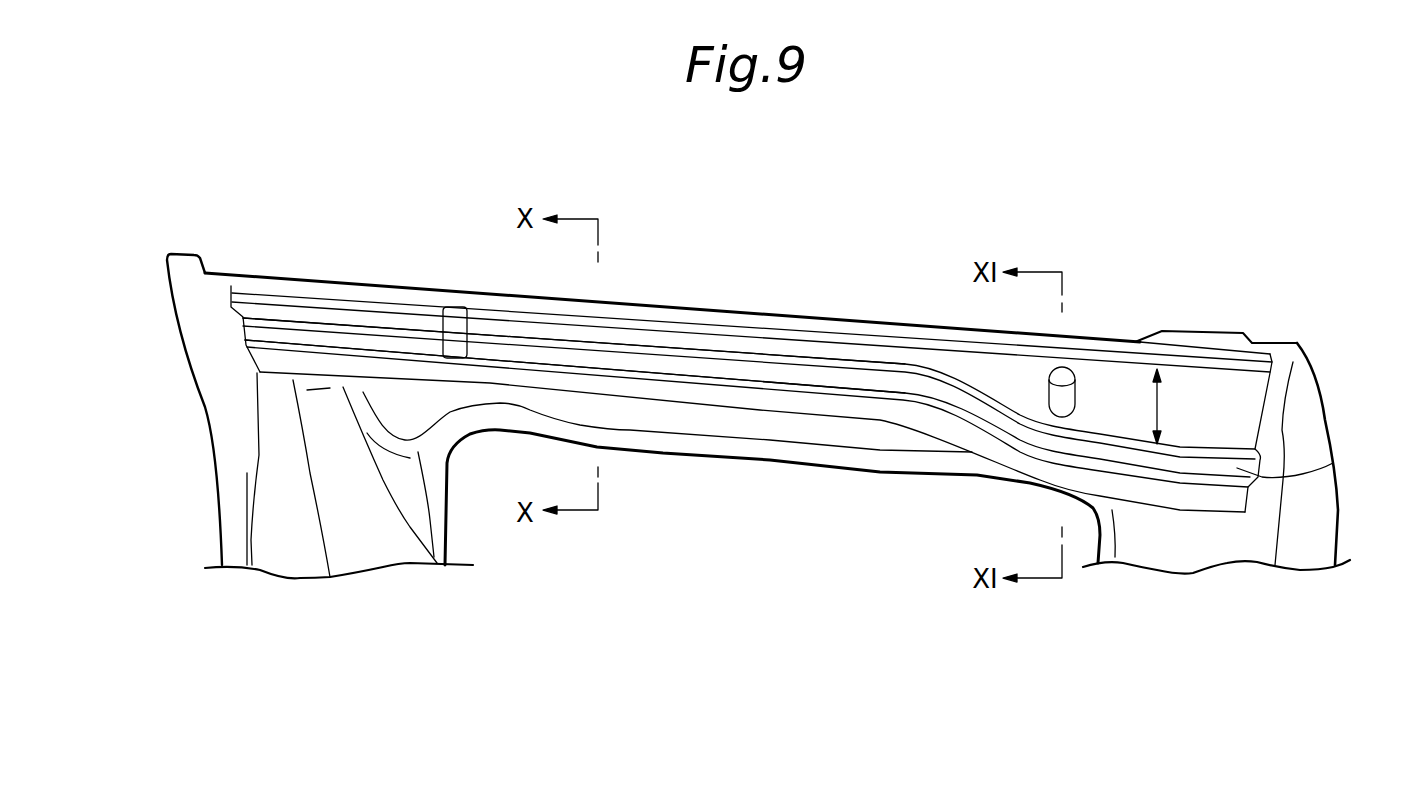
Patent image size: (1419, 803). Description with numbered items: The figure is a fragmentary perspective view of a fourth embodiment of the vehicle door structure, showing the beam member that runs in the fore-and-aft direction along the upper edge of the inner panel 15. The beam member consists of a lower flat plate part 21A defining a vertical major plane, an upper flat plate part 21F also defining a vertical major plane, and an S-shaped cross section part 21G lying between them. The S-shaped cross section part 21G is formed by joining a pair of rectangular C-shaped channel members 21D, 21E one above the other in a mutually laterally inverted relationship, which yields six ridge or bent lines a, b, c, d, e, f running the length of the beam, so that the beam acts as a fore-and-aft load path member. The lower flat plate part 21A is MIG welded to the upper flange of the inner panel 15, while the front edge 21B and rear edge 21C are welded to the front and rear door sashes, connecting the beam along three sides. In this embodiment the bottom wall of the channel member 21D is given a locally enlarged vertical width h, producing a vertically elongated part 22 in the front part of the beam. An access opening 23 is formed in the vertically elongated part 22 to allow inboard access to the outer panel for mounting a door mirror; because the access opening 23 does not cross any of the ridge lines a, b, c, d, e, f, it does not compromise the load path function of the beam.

The inner panel 15 is at (1210, 550).
The lower flat plate part 21A is at (793, 402).
The front edge 21B is at (1333, 463).
The rear edge 21C is at (267, 330).
The channel member 21D is at (677, 340).
The channel member 21E is at (678, 367).
The upper flat plate part 21F is at (768, 322).
The S-shaped cross section part 21G is at (467, 327).
The vertically elongated part 22 is at (1208, 390).
The access opening 23 is at (1077, 380).
The ridge line a is at (873, 337).
The ridge line b is at (927, 353).
The ridge line c is at (870, 363).
The ridge line d is at (918, 373).
The ridge line e is at (973, 413).
The ridge line f is at (1027, 447).
The width h is at (1169, 406).